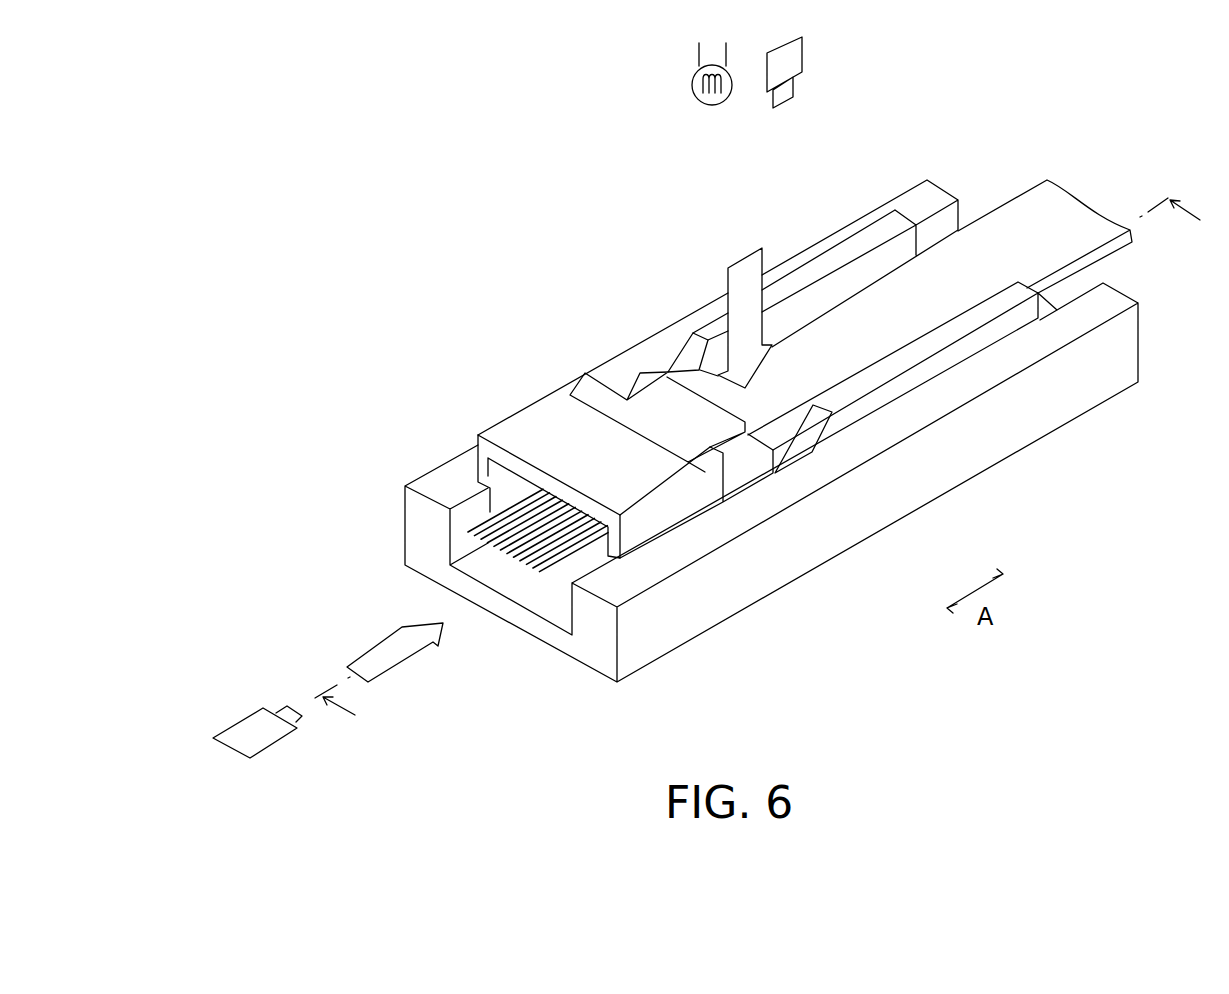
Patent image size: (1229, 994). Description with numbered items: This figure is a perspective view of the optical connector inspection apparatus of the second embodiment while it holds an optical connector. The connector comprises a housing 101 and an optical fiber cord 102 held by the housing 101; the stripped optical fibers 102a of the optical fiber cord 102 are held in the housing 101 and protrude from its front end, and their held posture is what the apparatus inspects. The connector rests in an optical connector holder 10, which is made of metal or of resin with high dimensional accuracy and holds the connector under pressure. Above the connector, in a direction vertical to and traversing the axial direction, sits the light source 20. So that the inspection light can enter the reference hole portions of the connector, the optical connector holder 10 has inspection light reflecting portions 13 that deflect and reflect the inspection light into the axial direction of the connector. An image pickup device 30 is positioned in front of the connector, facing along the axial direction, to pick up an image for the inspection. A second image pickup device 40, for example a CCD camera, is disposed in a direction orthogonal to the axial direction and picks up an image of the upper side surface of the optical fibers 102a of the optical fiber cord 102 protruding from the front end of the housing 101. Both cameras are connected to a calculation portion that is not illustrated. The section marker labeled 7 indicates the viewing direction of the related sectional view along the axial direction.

The optical connector holder 10 is at (857, 522).
The inspection light reflecting portion 13 is at (792, 597).
The light source 20 is at (692, 88).
The image pickup device 30 is at (270, 742).
The second image pickup device 40 is at (795, 52).
The housing 101 is at (603, 440).
The optical fiber cord 102 is at (945, 290).
The optical fibers 102a is at (537, 517).
The section line of FIG. 7 is at (767, 470).